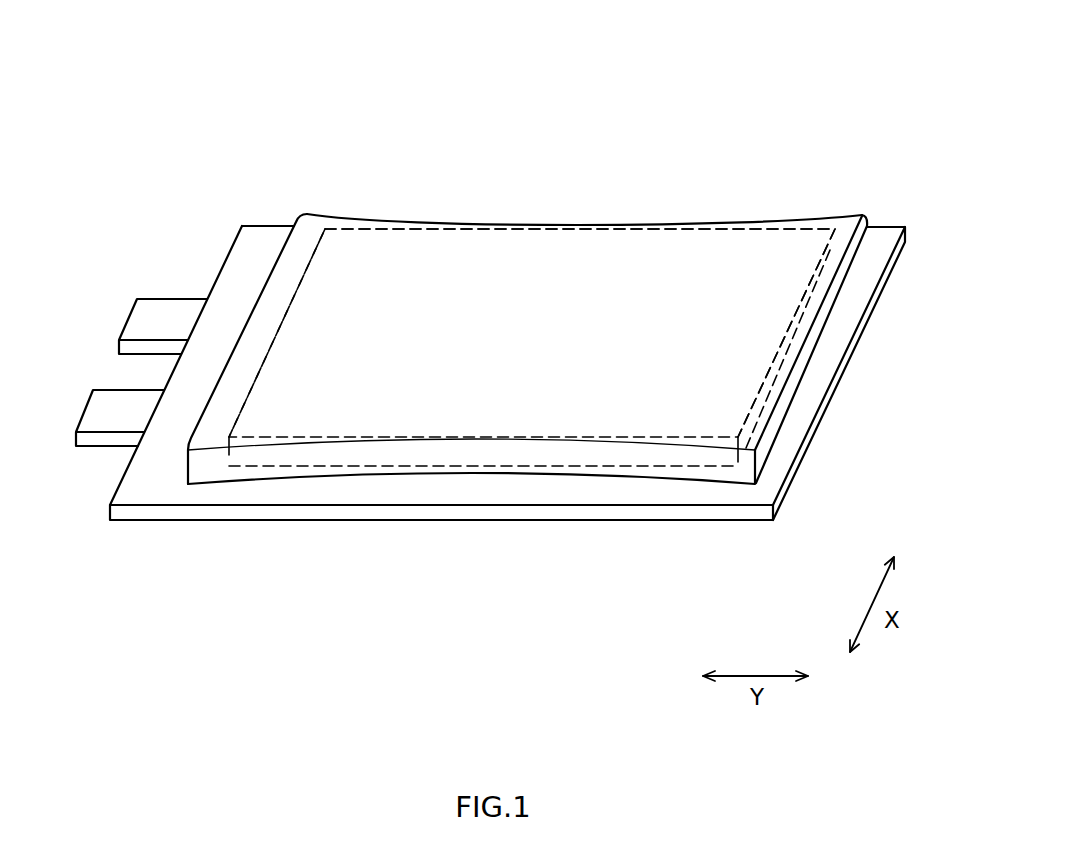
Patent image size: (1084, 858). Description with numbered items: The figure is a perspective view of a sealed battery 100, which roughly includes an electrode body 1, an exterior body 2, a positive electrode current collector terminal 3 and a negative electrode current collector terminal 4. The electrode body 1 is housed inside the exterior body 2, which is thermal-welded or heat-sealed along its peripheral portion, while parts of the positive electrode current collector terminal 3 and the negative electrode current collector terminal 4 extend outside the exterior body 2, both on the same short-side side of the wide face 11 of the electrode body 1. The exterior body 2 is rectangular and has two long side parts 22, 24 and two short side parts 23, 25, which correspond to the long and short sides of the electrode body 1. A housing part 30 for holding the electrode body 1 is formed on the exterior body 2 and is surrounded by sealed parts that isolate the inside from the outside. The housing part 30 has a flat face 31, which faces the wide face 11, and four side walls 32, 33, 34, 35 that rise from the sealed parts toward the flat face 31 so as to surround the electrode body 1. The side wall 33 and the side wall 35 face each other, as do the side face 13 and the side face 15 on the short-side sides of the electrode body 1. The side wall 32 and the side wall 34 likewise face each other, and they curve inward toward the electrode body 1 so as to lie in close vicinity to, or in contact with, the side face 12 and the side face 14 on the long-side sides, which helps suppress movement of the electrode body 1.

The sealed battery 100 is at (183, 48).
The electrode body 1 is at (381, 288).
The wide face 11 is at (527, 277).
The side face 12 is at (642, 455).
The side face 13 is at (800, 352).
The side face 14 is at (455, 228).
The side face 15 is at (273, 338).
The exterior body 2 is at (893, 222).
The long side part 22 is at (163, 515).
The short side part 23 is at (886, 272).
The long side part 24 is at (263, 224).
The short side part 25 is at (124, 472).
The positive electrode current collector terminal 3 is at (137, 325).
The negative electrode current collector terminal 4 is at (95, 414).
The housing part 30 is at (827, 213).
The flat face 31 is at (605, 268).
The side wall 32 is at (207, 468).
The side wall 33 is at (840, 293).
The side wall 34 is at (758, 218).
The side wall 35 is at (270, 267).